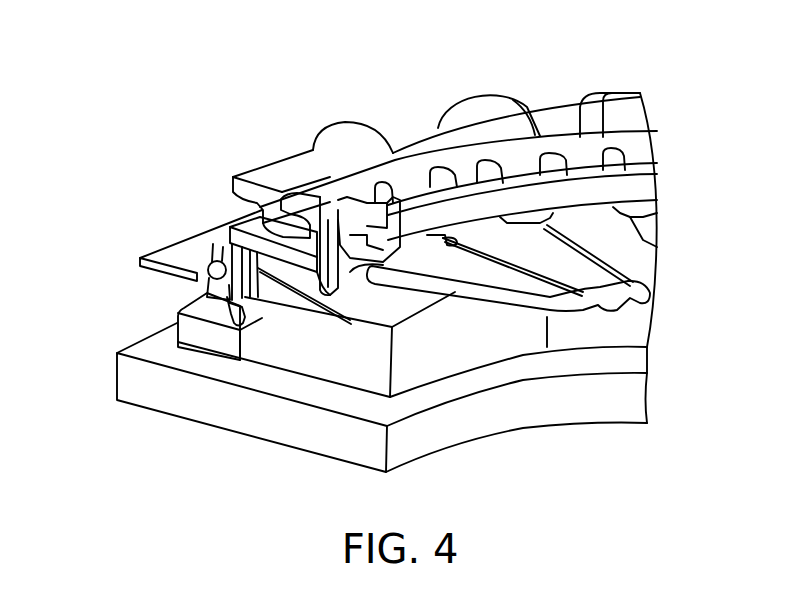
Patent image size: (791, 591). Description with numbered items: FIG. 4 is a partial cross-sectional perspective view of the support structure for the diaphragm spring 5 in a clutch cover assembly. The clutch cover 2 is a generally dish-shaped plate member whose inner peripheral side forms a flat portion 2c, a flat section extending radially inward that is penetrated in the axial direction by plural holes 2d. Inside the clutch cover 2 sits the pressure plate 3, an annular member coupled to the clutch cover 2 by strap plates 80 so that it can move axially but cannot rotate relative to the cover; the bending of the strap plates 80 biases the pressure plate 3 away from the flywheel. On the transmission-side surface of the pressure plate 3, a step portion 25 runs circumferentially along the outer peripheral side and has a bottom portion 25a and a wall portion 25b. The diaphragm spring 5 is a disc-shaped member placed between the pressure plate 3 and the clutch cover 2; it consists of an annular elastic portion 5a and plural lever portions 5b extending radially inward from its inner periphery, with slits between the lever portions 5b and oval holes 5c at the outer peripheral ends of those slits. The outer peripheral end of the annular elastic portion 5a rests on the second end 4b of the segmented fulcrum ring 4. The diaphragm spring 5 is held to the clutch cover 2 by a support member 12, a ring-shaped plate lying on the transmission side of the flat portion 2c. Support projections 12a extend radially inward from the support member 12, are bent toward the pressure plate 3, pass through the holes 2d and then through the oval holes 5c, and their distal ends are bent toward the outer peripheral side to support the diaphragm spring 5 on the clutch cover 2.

The clutch cover 2 is at (336, 110).
The flat portion 2c is at (356, 265).
The holes 2d is at (330, 245).
The pressure plate 3 is at (170, 311).
The fulcrum ring 4 is at (257, 230).
The second end 4b is at (267, 262).
The diaphragm spring 5 is at (665, 282).
The annular elastic portion 5a is at (262, 232).
The lever portions 5b is at (637, 243).
The oval holes 5c is at (522, 238).
The support member 12 is at (437, 144).
The support projections 12a is at (318, 290).
The step portion 25 is at (183, 288).
The bottom portion 25a is at (208, 300).
The wall portion 25b is at (240, 322).
The strap plates 80 is at (183, 253).